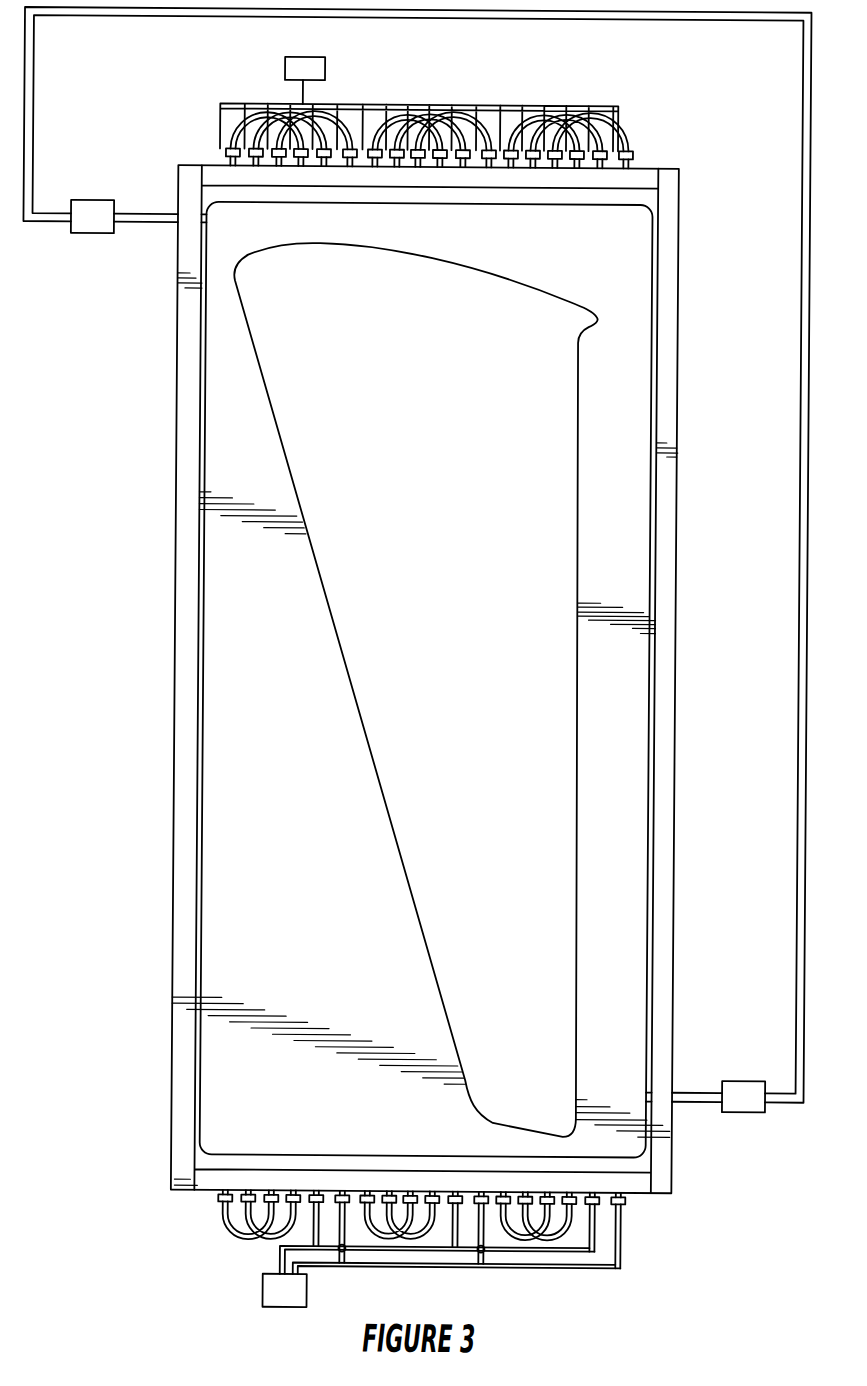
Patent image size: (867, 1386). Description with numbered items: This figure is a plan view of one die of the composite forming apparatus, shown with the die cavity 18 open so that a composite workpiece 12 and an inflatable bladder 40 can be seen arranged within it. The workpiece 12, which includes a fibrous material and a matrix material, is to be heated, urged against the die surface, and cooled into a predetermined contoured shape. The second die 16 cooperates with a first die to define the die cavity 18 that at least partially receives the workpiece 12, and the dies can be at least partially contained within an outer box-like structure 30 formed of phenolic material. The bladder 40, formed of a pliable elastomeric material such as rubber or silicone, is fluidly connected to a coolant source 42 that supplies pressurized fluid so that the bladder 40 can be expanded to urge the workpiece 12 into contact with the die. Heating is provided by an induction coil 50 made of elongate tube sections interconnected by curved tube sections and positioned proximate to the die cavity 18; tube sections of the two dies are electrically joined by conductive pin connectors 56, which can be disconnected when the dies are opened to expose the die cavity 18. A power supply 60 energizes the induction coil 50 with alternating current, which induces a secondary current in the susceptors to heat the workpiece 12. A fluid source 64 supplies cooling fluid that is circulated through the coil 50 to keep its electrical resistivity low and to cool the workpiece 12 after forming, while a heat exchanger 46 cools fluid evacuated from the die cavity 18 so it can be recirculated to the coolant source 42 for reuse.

The composite workpiece 12 is at (335, 631).
The second die 16 is at (193, 434).
The die cavity 18 is at (232, 552).
The box-like structure 30 is at (171, 365).
The inflatable bladder 40 is at (197, 307).
The coolant source 42 is at (82, 236).
The heat exchanger 46 is at (748, 1112).
The induction coil 50 is at (224, 1250).
The pin connector 56 is at (626, 152).
The power supply 60 is at (280, 69).
The fluid source 64 is at (279, 1309).